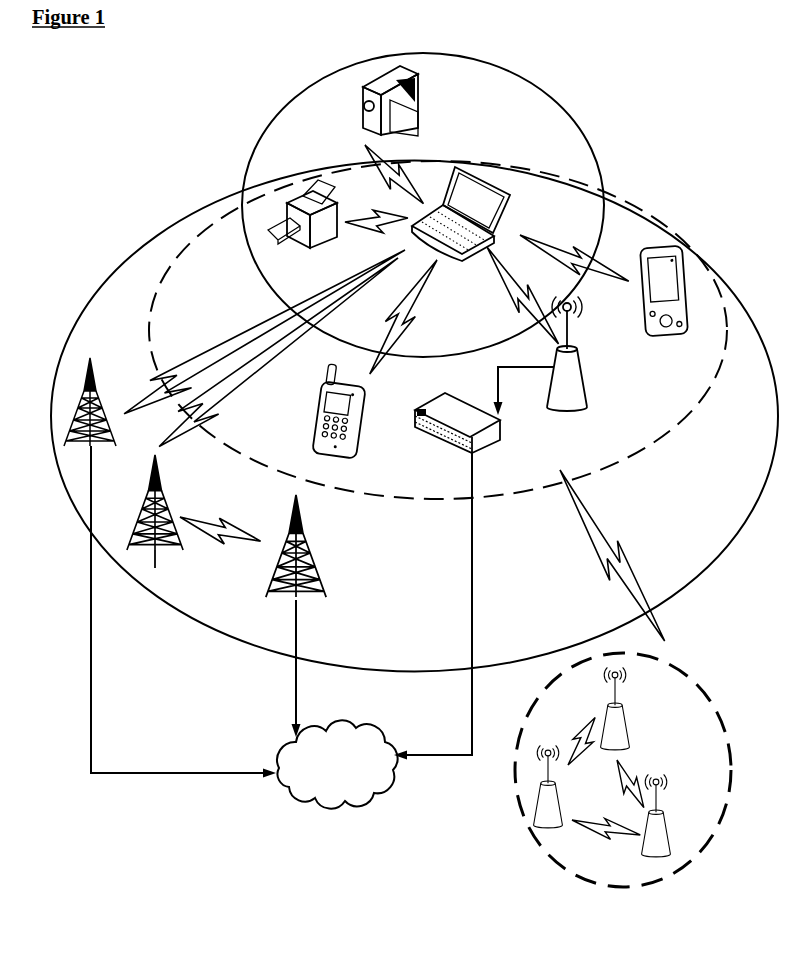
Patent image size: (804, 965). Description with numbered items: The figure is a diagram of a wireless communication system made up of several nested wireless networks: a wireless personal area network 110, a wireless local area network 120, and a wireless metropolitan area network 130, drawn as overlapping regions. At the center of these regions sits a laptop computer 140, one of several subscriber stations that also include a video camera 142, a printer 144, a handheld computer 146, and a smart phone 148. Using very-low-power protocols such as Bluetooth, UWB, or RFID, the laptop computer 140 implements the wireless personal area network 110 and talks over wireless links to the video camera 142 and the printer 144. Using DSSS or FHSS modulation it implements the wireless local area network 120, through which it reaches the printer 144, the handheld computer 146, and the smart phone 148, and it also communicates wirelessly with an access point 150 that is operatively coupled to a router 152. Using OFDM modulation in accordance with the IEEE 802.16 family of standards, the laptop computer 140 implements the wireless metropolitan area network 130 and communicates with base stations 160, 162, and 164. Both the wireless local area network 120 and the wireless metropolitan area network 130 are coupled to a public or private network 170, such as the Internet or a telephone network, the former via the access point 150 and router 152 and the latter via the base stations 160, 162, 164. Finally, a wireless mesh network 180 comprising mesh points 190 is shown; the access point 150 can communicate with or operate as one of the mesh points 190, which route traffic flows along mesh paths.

The wireless personal area network (WPAN) 110 is at (240, 178).
The wireless local area network (WLAN) 120 is at (187, 248).
The wireless metropolitan area network (WMAN) 130 is at (127, 258).
The laptop computer 140 is at (487, 174).
The video camera 142 is at (418, 112).
The printer 144 is at (340, 240).
The handheld computer 146 is at (673, 338).
The smart phone 148 is at (357, 453).
The access point (AP) 150 is at (580, 412).
The router 152 is at (492, 442).
The base station 160 is at (88, 362).
The base station 162 is at (168, 515).
The base station 164 is at (308, 578).
The network 170 is at (387, 733).
The wireless mesh network 180 is at (627, 759).
The mesh points (MPs) 190 is at (657, 755).